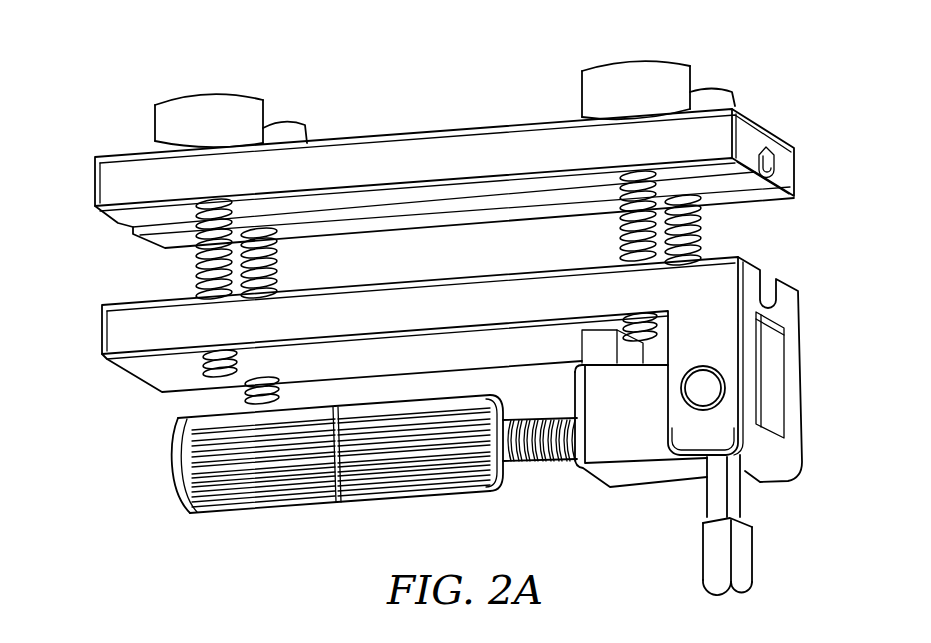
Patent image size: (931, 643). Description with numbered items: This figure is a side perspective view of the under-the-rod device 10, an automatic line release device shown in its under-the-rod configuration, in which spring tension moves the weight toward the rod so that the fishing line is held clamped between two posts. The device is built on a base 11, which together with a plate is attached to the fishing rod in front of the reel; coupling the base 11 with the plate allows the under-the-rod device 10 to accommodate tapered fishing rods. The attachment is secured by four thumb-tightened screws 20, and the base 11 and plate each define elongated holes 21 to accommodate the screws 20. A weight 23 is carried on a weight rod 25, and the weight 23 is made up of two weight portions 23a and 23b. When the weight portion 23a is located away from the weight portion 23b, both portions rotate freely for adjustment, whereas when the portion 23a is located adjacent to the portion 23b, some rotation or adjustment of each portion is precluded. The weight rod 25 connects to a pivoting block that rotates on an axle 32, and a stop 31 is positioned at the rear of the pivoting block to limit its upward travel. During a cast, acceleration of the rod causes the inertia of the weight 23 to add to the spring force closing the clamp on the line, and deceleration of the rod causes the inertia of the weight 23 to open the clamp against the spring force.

The under-the-rod device 10 is at (99, 119).
The base 11 is at (746, 128).
The thumb-tightened screws 20 is at (255, 107).
The elongated holes 21 is at (192, 206).
The weight 23 is at (173, 461).
The weight portion 23a is at (288, 503).
The weight portion 23b is at (430, 487).
The weight rod 25 is at (537, 458).
The stop 31 is at (632, 350).
The axle 32 is at (712, 388).